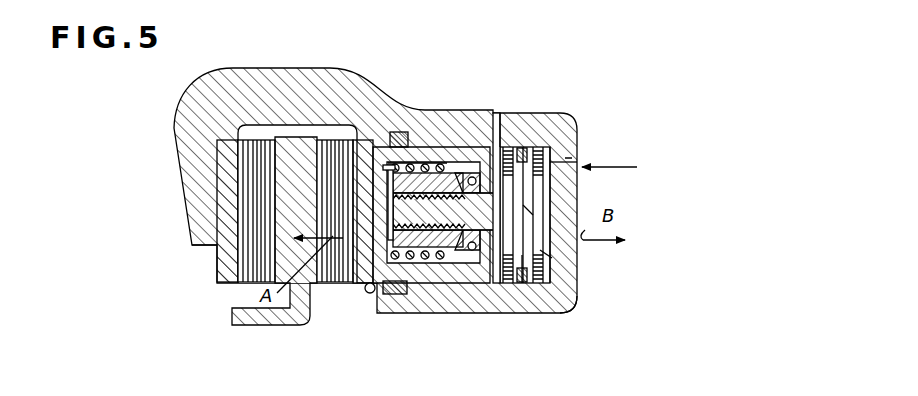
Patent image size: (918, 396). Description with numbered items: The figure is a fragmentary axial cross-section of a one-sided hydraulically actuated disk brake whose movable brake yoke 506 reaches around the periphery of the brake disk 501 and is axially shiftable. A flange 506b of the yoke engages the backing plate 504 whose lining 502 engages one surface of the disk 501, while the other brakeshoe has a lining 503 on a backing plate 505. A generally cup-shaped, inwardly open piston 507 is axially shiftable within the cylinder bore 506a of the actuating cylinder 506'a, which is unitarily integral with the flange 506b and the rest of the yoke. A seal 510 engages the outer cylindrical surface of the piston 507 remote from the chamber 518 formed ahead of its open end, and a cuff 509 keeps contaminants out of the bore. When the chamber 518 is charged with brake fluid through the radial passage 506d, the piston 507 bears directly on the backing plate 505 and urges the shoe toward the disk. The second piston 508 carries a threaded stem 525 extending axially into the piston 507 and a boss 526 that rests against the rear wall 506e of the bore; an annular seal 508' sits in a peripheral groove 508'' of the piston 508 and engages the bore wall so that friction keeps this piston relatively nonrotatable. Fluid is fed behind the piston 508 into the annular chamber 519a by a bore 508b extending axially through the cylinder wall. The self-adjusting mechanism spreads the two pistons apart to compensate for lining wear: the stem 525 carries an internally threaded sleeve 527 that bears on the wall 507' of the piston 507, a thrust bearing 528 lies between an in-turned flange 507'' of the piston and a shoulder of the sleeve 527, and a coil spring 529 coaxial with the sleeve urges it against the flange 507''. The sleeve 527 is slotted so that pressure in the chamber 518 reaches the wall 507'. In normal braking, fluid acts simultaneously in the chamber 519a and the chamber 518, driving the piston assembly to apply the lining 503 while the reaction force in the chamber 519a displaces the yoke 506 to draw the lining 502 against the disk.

The brake yoke 506 is at (375, 160).
The brake disk 501 is at (290, 148).
The lining 502 is at (245, 218).
The lining 503 is at (360, 150).
The backing plate 504 is at (225, 172).
The backing plate 505 is at (363, 150).
The cylinder bore 506a is at (451, 213).
The flange 506b is at (195, 238).
The radial passage 506d is at (500, 112).
The rear wall 506e is at (552, 279).
The actuating cylinder 506'a is at (608, 310).
The piston 507 is at (440, 134).
The wall of the piston 507' is at (391, 273).
The in-turned flange 507'' is at (594, 264).
The second piston 508 is at (543, 301).
The annular seal 508' is at (568, 121).
The peripheral groove 508'' is at (587, 197).
The bore 508b is at (577, 162).
The cuff 509 is at (372, 296).
The seal 510 is at (388, 309).
The chamber 518 is at (517, 145).
The annular chamber 519a is at (565, 160).
The threaded stem 525 is at (427, 270).
The boss 526 is at (552, 238).
The internally threaded sleeve 527 is at (497, 100).
The thrust bearing 528 is at (472, 257).
The coil spring 529 is at (430, 162).